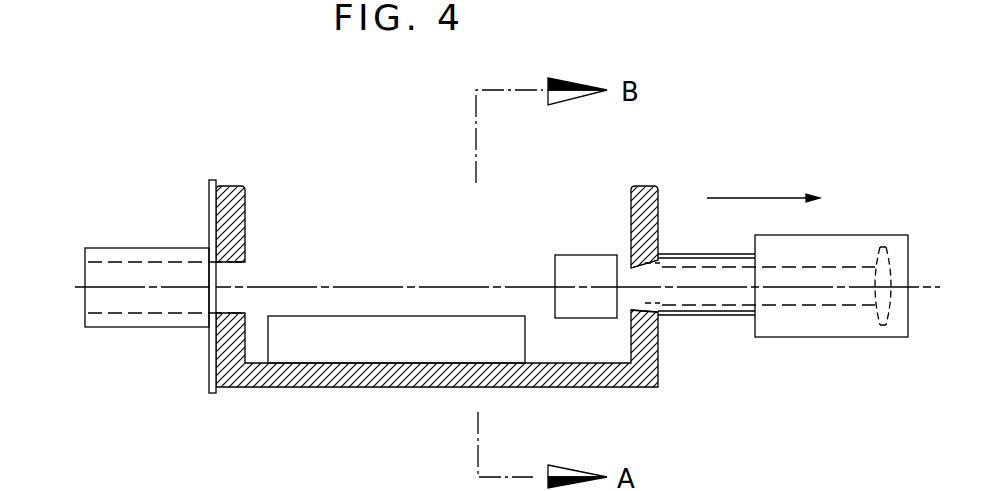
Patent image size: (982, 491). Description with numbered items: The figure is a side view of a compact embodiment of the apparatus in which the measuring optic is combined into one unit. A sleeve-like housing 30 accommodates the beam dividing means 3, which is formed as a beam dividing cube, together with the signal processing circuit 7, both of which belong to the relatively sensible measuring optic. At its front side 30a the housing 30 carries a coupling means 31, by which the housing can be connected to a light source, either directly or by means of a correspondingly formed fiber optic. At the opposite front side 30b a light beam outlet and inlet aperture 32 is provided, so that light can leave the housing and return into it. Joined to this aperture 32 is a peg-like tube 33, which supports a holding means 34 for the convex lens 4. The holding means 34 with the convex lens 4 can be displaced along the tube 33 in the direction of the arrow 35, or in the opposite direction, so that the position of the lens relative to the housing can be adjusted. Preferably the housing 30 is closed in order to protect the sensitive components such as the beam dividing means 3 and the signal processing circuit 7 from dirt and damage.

The beam dividing means 3 is at (583, 263).
The convex lens 4 is at (885, 277).
The signal processing circuit 7 is at (308, 347).
The housing 30 is at (615, 380).
The front side 30a is at (232, 188).
The opposite front side 30b is at (643, 192).
The coupling means 31 is at (133, 275).
The light beam outlet and inlet aperture 32 is at (650, 288).
The peg-like tube 33 is at (708, 296).
The holding means 34 is at (830, 329).
The arrow 35 is at (763, 214).